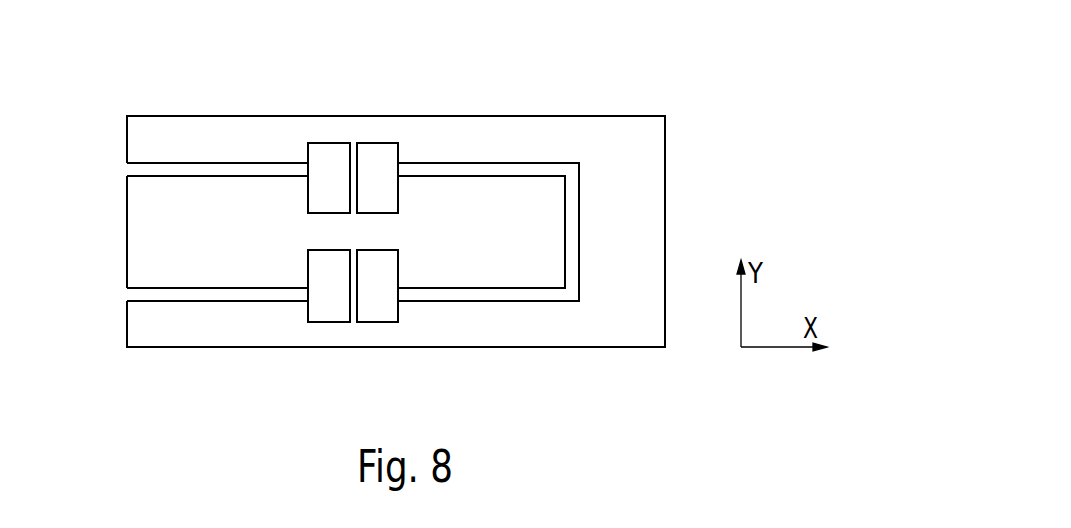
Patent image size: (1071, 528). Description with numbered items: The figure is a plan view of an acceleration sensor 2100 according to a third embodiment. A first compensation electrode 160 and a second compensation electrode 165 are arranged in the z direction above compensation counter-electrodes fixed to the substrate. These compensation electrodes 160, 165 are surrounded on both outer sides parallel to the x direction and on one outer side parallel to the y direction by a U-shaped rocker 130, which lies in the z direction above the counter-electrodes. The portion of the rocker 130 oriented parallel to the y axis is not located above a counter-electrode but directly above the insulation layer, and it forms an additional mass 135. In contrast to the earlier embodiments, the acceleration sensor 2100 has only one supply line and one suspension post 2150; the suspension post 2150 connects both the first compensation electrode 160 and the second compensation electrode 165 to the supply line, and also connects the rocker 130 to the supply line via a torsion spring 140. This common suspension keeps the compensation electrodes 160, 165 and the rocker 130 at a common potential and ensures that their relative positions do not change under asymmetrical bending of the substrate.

The acceleration sensor 2100 is at (688, 62).
The rocker 130 is at (227, 133).
The additional mass 135 is at (640, 165).
The torsion spring 140 is at (353, 160).
The first compensation electrode 160 is at (152, 233).
The second compensation electrode 165 is at (507, 195).
The suspension post 2150 is at (332, 233).